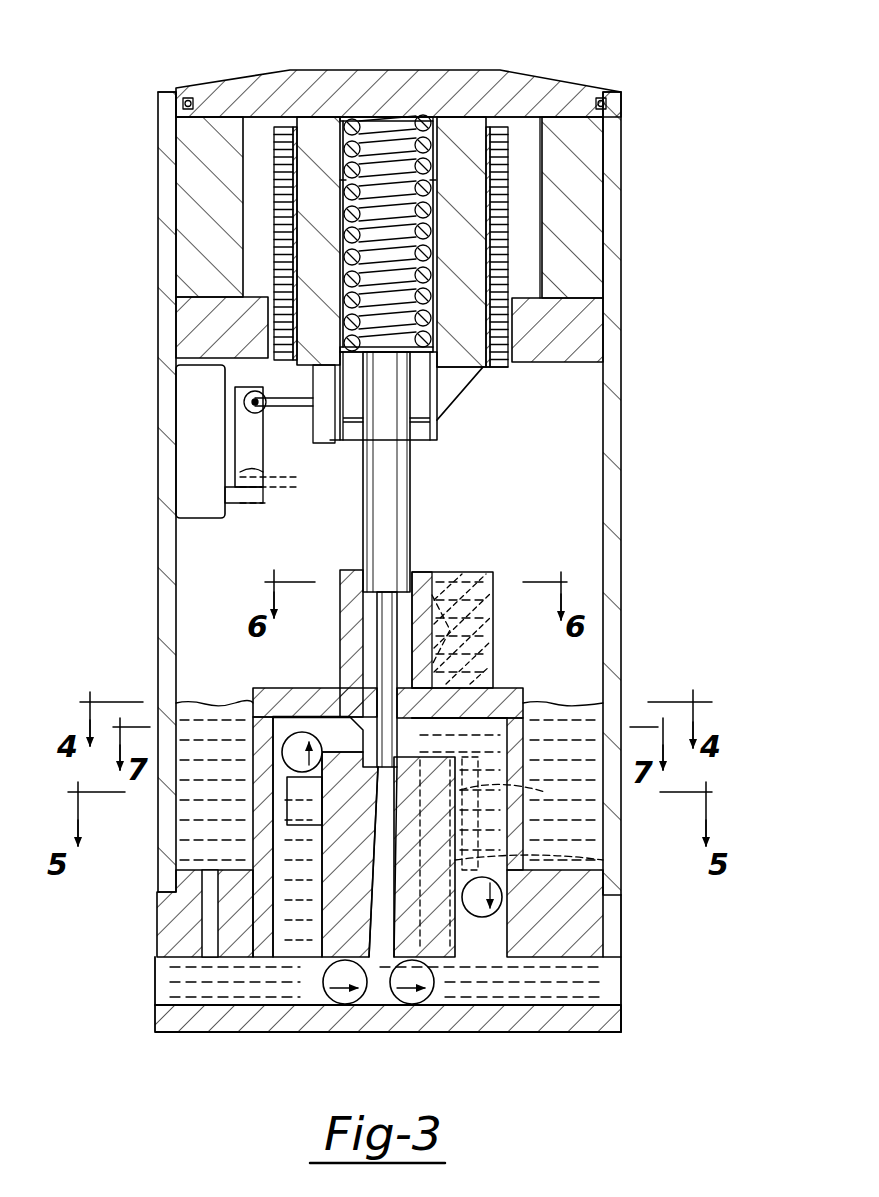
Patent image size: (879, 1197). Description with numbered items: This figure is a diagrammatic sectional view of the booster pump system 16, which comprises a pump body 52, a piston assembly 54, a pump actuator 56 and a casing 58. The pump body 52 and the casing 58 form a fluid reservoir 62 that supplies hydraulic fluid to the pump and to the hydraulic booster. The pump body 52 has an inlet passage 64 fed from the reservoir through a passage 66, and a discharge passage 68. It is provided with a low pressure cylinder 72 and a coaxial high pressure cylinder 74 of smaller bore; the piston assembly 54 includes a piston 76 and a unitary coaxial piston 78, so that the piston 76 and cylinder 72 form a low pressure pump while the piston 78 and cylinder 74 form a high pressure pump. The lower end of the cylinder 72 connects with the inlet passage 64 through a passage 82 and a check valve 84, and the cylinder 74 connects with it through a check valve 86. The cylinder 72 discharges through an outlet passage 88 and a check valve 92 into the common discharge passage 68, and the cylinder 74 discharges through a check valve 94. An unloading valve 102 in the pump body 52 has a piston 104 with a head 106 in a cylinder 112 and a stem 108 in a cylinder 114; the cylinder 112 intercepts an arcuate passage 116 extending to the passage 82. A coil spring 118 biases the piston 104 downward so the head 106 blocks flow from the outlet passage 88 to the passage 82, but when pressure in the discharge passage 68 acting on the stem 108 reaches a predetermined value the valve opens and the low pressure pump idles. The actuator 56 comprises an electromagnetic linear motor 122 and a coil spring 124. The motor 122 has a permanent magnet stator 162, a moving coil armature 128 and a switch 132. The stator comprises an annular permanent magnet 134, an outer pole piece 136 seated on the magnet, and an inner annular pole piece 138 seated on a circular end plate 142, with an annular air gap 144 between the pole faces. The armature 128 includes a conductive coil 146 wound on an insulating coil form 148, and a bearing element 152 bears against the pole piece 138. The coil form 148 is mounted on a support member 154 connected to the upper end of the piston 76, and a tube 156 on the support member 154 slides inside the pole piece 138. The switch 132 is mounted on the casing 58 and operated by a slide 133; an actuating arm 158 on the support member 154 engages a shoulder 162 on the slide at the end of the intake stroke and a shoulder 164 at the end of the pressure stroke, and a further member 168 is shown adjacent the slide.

The booster pump system 16 is at (632, 92).
The pump body 52 is at (499, 677).
The piston assembly 54 is at (455, 557).
The pump actuator 56 is at (510, 428).
The casing 58 is at (622, 405).
The fluid reservoir 62 is at (203, 656).
The inlet passage 64 is at (185, 997).
The passage 66 is at (210, 925).
The discharge passage 68 is at (585, 975).
The low pressure cylinder 72 is at (340, 624).
The high pressure cylinder 74 is at (378, 892).
The piston 76 is at (412, 529).
The coaxial piston 78 is at (378, 648).
The passage 82 is at (288, 930).
The check valve 84 is at (290, 733).
The check valve 86 is at (334, 995).
The outlet passage 88 is at (500, 832).
The check valve 92 is at (490, 932).
The check valve 94 is at (408, 1000).
The unloading valve 102 is at (535, 705).
The piston 104 is at (492, 768).
The piston head 106 is at (618, 700).
The stem 108 is at (445, 950).
The cylinder 112 is at (494, 631).
The cylinder 114 is at (604, 860).
The arcuate passage 116 is at (292, 800).
The coil spring 118 is at (494, 576).
The electromagnetic linear motor 122 is at (615, 140).
The coil spring 124 is at (374, 118).
The moving coil armature 128 is at (517, 233).
The switch 132 is at (257, 521).
The slide 133 is at (232, 424).
The annular permanent magnet 134 is at (592, 266).
The outer pole piece 136 is at (588, 347).
The inner annular pole piece 138 is at (445, 388).
The circular end plate 142 is at (512, 90).
The annular air gap 144 is at (508, 372).
The conductive coil 146 is at (272, 237).
The insulating coil form 148 is at (291, 190).
The bearing element 152 is at (306, 126).
The support member 154 is at (458, 396).
The tube 156 is at (339, 315).
The actuating arm 158 is at (263, 410).
The permanent magnet stator 162 is at (488, 58).
The shoulder 164 is at (283, 478).
The block 168 is at (185, 460).